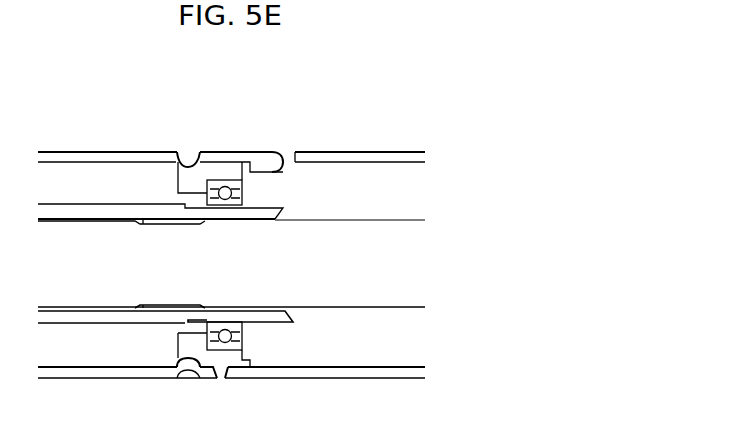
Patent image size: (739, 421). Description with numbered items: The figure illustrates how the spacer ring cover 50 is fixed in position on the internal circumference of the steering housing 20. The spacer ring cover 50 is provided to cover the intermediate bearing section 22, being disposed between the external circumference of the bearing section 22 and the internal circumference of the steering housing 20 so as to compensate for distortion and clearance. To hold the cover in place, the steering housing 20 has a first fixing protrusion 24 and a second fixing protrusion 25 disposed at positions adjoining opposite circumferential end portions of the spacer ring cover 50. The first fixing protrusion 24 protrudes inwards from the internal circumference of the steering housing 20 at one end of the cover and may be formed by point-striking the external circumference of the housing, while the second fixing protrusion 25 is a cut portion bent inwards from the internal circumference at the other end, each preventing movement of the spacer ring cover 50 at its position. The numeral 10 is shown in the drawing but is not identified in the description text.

The base plate 10 is at (400, 220).
The steering housing 20 is at (103, 132).
The intermediate bearing section 22 is at (243, 201).
The first fixing protrusion 24 is at (189, 153).
The second fixing protrusion 25 is at (268, 153).
The spacer ring cover 50 is at (225, 153).